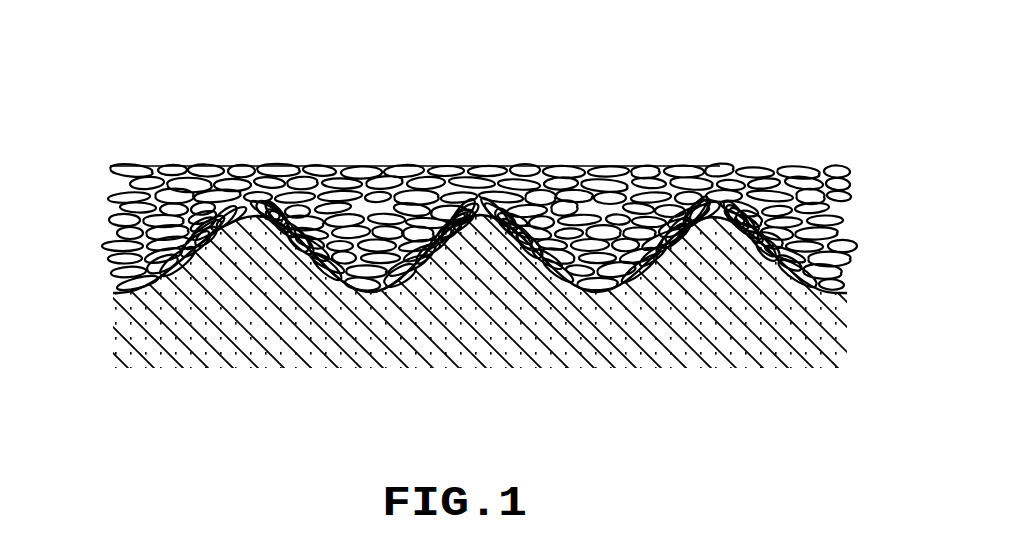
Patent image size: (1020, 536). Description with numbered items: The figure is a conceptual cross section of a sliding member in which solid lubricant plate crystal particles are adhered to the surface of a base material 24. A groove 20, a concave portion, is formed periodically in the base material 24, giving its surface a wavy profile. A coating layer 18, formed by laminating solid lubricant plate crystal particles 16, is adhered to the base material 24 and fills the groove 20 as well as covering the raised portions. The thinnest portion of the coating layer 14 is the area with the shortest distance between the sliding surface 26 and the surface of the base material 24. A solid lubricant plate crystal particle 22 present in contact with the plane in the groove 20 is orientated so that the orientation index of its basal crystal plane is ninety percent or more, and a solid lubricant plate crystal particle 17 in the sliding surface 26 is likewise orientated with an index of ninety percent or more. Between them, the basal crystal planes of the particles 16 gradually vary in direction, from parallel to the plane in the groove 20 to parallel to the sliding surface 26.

The thinnest portion of the coating layer 14 is at (733, 166).
The solid lubricant plate crystal particle 16 is at (438, 166).
The solid lubricant plate crystal particle in the sliding surface 17 is at (438, 166).
The coating layer 18 is at (88, 173).
The groove 20 is at (365, 287).
The solid lubricant plate crystal particle in contact with the groove plane 22 is at (588, 290).
The base material 24 is at (822, 330).
The sliding surface 26 is at (803, 170).